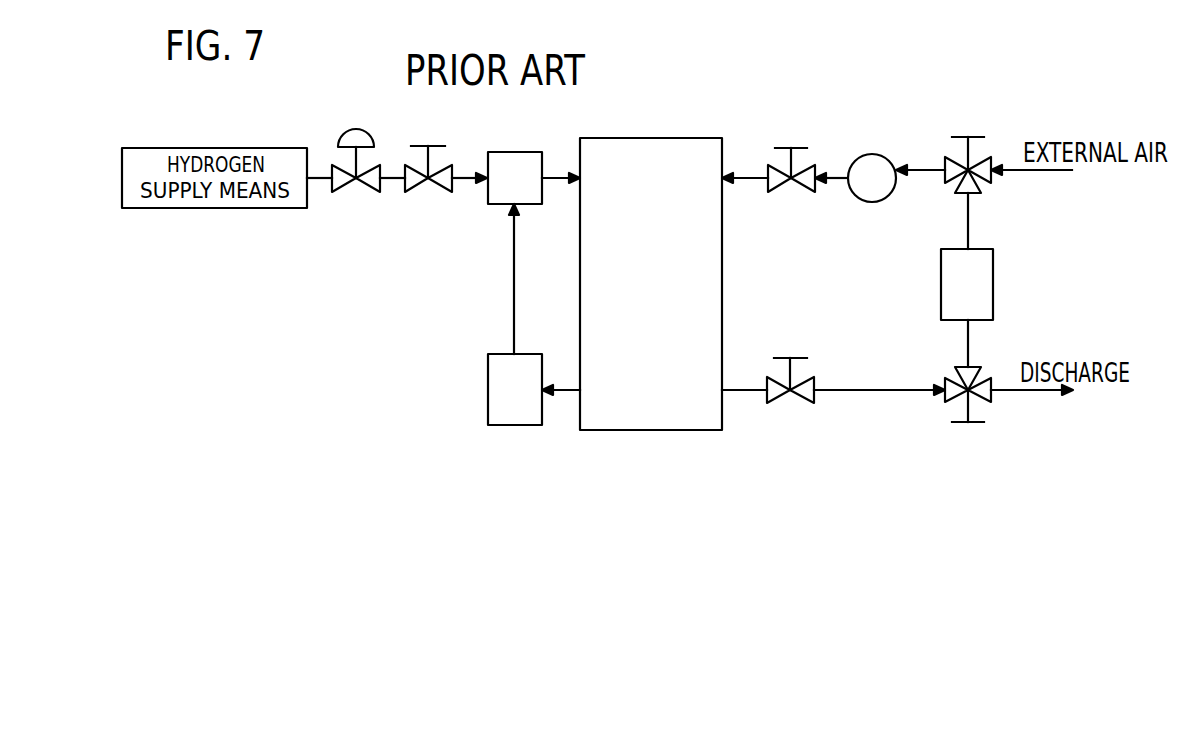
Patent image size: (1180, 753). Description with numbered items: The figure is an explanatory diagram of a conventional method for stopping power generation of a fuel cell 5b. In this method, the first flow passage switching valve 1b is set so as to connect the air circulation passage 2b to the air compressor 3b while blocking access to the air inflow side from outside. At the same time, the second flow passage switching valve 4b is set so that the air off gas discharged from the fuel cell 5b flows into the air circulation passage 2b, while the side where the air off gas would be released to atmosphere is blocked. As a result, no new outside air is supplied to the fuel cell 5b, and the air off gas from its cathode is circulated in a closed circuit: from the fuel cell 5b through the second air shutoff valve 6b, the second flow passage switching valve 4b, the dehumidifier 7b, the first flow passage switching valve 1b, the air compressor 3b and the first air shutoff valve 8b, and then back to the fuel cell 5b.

The first flow passage switching valve 1b is at (981, 137).
The air circulation passage 2b is at (967, 347).
The air compressor 3b is at (888, 158).
The second flow passage switching valve 4b is at (975, 432).
The fuel cell 5b is at (645, 137).
The second air shutoff valve 6b is at (803, 357).
The dehumidifier 7b is at (993, 270).
The first air shutoff valve 8b is at (779, 147).